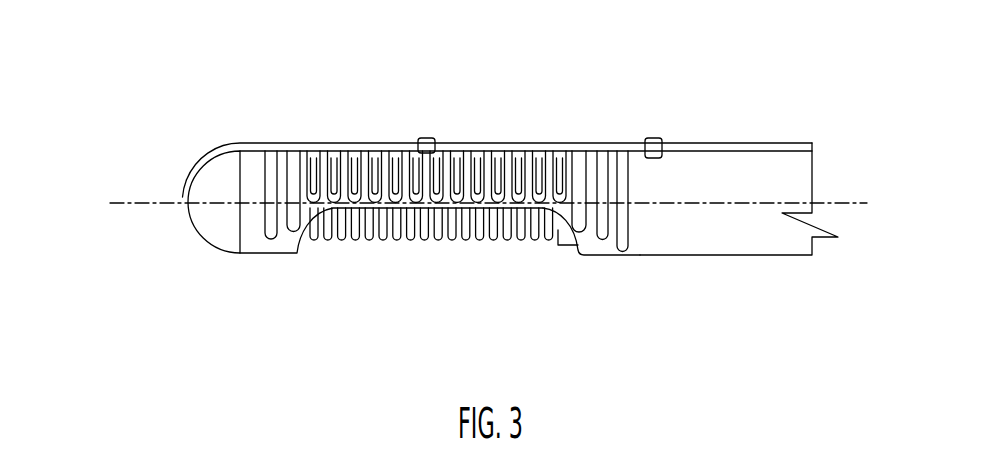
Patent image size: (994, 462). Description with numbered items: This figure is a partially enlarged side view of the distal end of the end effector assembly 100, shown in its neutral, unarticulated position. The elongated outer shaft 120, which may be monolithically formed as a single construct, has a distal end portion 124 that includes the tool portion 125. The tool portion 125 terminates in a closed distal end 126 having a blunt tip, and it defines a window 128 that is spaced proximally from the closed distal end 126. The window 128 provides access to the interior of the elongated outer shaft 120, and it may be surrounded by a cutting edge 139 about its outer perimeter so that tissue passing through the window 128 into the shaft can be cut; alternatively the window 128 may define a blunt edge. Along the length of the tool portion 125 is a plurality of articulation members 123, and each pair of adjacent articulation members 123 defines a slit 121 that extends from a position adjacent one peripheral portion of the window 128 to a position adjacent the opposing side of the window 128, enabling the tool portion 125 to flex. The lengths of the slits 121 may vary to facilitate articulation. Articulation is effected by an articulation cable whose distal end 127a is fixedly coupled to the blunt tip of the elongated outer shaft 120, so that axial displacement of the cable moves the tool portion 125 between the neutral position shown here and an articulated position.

The end effector assembly 100 is at (567, 100).
The elongated outer shaft 120 is at (775, 244).
The slit 121 is at (455, 160).
The articulation members 123 is at (383, 157).
The distal end portion 124 is at (602, 258).
The tool portion 125 is at (253, 253).
The closed distal end 126 is at (197, 160).
The distal end of articulation cable 127a is at (183, 183).
The window 128 is at (297, 253).
The cutting edge 139 is at (523, 237).